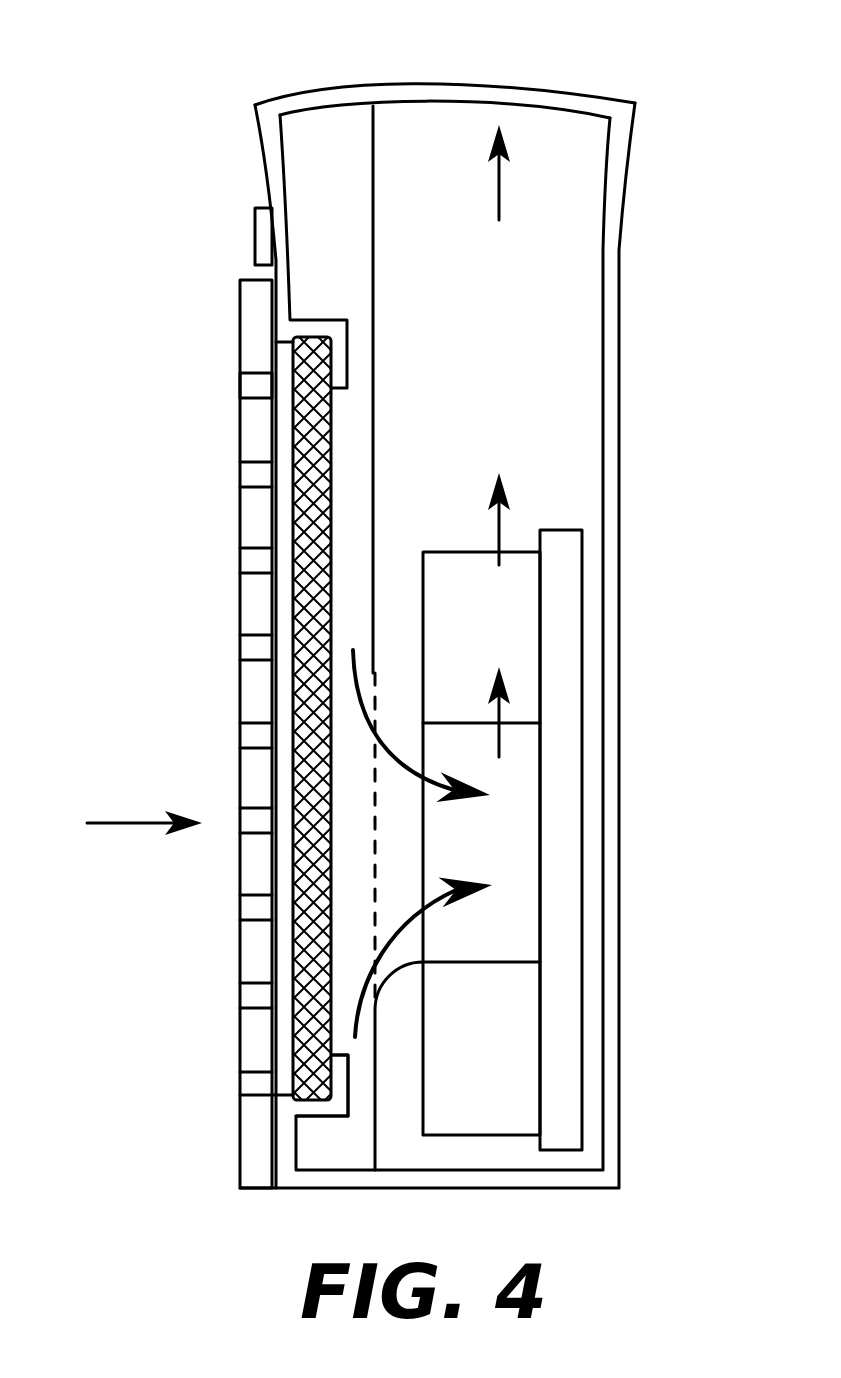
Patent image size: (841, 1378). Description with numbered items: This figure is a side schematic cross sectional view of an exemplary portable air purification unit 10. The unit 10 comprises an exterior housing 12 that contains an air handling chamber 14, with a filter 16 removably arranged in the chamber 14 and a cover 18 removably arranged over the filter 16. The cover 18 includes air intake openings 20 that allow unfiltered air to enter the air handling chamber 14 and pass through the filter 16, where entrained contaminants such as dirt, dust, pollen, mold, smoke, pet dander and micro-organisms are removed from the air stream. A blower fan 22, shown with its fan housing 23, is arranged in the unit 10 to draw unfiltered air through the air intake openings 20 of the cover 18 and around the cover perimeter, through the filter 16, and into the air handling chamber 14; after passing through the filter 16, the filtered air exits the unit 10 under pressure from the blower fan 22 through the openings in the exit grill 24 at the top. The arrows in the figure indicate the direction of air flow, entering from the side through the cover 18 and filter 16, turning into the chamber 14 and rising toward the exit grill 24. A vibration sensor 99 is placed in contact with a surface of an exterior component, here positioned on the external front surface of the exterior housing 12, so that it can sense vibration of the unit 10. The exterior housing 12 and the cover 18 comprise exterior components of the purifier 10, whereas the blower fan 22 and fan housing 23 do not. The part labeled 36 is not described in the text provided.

The portable air purification unit 10 is at (157, 52).
The exterior housing 12 is at (608, 547).
The air handling chamber 14 is at (353, 547).
The filter 16 is at (307, 607).
The cover 18 is at (235, 317).
The air intake openings 20 is at (255, 385).
The blower fan 22 is at (527, 835).
The fan housing 23 is at (567, 1013).
The exit grill 24 is at (558, 88).
The filter support bracket 36 is at (343, 1083).
The vibration sensor 99 is at (253, 237).